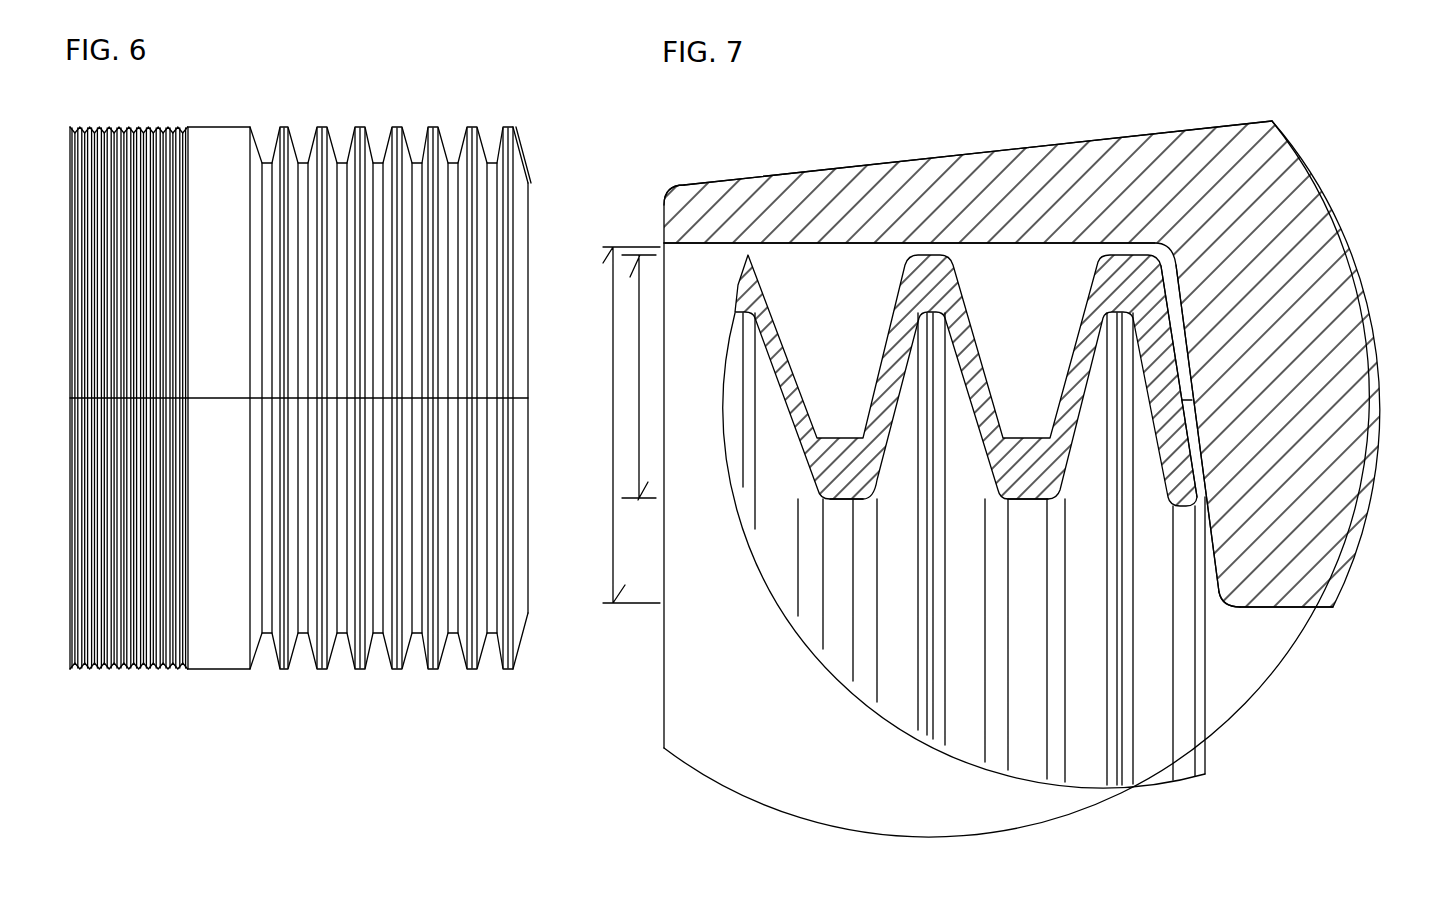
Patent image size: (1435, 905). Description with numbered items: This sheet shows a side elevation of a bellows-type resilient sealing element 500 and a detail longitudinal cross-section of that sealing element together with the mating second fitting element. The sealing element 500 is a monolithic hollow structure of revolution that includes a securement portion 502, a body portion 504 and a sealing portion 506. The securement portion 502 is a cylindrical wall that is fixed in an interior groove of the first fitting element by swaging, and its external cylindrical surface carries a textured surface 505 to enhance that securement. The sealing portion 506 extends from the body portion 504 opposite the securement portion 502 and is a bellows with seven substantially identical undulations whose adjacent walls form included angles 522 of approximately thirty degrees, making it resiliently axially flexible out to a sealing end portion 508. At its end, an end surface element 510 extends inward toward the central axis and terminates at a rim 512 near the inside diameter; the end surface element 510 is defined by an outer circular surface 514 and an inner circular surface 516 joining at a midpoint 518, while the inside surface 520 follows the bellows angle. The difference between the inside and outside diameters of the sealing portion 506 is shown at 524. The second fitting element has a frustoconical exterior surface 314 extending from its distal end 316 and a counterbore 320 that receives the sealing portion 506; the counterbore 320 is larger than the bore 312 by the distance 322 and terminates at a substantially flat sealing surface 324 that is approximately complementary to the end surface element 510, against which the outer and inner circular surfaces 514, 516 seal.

In FIG. 6, the resilient sealing element 500 is at (238, 103).
In FIG. 6, the securement portion 502 is at (129, 680).
In FIG. 6, the body portion 504 is at (220, 680).
In FIG. 6, the textured surface 505 is at (130, 126).
In FIG. 6, the sealing portion 506 is at (398, 680).
In FIG. 6, the sealing end portion 508 is at (509, 122).
In FIG. 7, the sealing end portion 508 is at (1162, 253).
In FIG. 6, the end surface element 510 is at (521, 160).
In FIG. 7, the end surface element 510 is at (1178, 333).
In FIG. 6, the rim 512 is at (527, 575).
In FIG. 7, the rim 512 is at (1206, 683).
In FIG. 7, the frustoconical exterior surface 314 is at (893, 162).
In FIG. 7, the distal end 316 is at (663, 223).
In FIG. 7, the counterbore 320 is at (697, 293).
In FIG. 7, the distance 322 is at (612, 418).
In FIG. 7, the difference between inside and outside diameters 524 is at (638, 322).
In FIG. 7, the included angles 522 is at (1000, 430).
In FIG. 7, the inside surface 520 is at (1158, 440).
In FIG. 7, the outer circular surface 514 is at (1223, 263).
In FIG. 7, the midpoint 518 is at (1185, 350).
In FIG. 7, the inner circular surface 516 is at (1188, 406).
In FIG. 7, the bore 312 is at (1307, 618).
In FIG. 7, the sealing surface 324 is at (1217, 546).